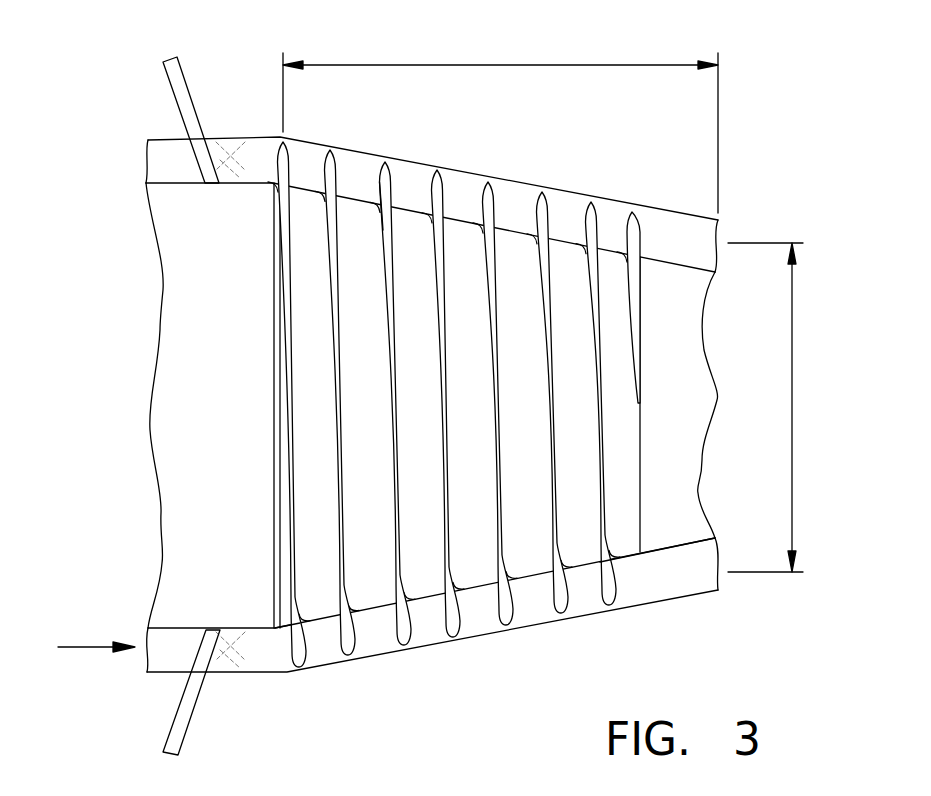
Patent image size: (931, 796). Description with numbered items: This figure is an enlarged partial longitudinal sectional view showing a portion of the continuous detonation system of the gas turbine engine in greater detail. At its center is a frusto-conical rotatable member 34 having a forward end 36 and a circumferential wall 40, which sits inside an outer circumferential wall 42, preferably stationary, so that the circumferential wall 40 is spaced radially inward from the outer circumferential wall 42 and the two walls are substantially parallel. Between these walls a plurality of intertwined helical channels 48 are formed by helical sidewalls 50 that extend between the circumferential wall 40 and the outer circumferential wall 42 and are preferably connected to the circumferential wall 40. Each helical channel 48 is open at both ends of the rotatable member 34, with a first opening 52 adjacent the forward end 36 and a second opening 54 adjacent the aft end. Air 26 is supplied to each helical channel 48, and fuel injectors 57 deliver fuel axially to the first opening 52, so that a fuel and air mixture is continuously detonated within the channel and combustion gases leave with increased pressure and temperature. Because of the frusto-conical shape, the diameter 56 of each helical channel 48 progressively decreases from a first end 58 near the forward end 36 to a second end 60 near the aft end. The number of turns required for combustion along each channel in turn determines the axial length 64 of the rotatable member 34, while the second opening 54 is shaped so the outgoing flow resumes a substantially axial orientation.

The air 26 is at (80, 647).
The rotatable member 34 is at (503, 227).
The forward end 36 is at (275, 550).
The circumferential wall 40 is at (708, 548).
The outer circumferential wall 42 is at (693, 215).
The helical channel 48 is at (299, 220).
The helical sidewalls 50 is at (381, 213).
The first opening 52 is at (283, 632).
The second opening 54 is at (632, 564).
The diameter 56 is at (793, 432).
The fuel injectors 57 is at (177, 725).
The first end 58 is at (283, 384).
The second end 60 is at (642, 402).
The axial length 64 is at (388, 62).